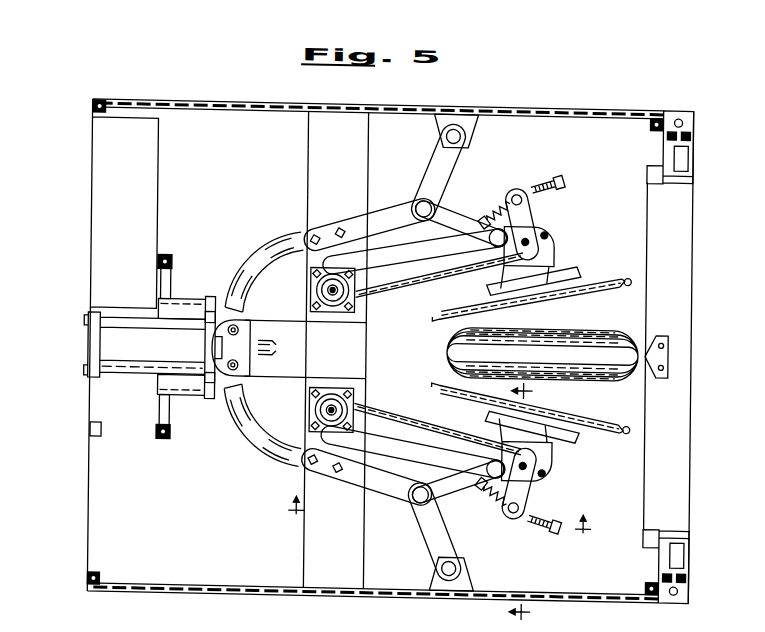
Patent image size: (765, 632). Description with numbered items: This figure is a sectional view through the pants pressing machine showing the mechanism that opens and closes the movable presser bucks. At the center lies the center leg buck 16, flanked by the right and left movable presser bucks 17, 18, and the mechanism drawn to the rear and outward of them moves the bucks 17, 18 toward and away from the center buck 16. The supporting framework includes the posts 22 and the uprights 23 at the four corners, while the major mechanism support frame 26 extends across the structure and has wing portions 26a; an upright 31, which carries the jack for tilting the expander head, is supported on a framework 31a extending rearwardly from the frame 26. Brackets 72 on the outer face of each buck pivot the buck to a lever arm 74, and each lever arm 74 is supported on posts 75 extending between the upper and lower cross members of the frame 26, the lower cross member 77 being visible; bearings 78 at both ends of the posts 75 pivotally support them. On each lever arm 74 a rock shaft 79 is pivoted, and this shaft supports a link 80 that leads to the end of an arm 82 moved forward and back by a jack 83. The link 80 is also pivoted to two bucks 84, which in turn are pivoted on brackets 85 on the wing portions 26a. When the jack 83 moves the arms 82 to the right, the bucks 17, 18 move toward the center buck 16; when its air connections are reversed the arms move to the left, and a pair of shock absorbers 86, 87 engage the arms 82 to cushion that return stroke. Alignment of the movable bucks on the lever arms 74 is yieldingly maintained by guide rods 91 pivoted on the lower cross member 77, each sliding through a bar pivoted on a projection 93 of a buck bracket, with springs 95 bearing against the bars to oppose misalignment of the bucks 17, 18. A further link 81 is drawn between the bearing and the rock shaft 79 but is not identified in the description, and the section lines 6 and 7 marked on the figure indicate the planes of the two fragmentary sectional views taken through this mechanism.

The section line 6— 6 is at (530, 503).
The section line 7— 7 is at (438, 517).
The center leg buck 16 is at (447, 354).
The right movable presser buck 17 is at (452, 316).
The left movable presser buck 18 is at (443, 391).
The post 22 is at (171, 272).
The upright 23 is at (93, 116).
The major mechanism support frame 26 is at (330, 110).
The wing portion 26a is at (411, 91).
The upright 31 is at (277, 347).
The framework 31a is at (348, 349).
The bracket 72 is at (548, 267).
The lever arm 74 is at (413, 269).
The post 75 is at (354, 292).
The lower cross member 77 is at (357, 509).
The bearing 78 is at (318, 296).
The rock shaft 79 is at (491, 350).
The link 80 is at (458, 206).
The link bar 81 is at (425, 258).
The arm 82 is at (384, 212).
The jack 83 is at (169, 355).
The buck 84 is at (445, 171).
The bracket 85 is at (468, 128).
The shock absorber 86 is at (194, 311).
The shock absorber 87 is at (197, 402).
The guide rod 91 is at (493, 209).
The projection 93 is at (536, 212).
The spring 95 is at (537, 188).